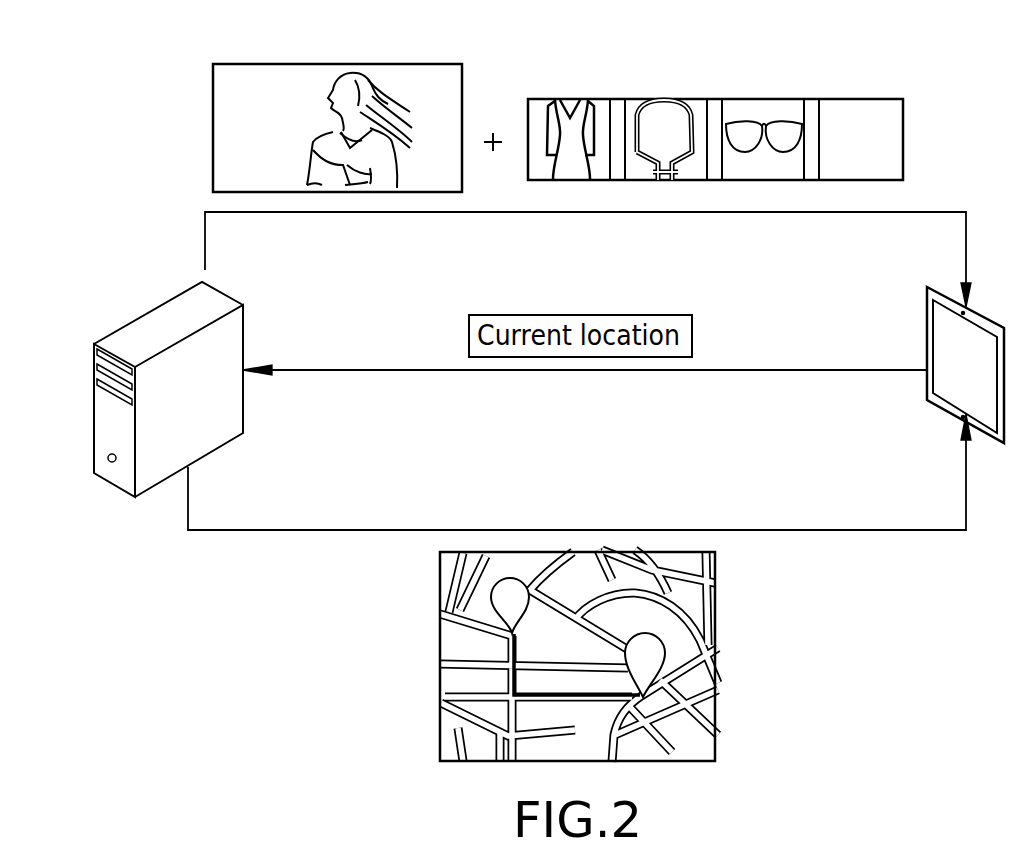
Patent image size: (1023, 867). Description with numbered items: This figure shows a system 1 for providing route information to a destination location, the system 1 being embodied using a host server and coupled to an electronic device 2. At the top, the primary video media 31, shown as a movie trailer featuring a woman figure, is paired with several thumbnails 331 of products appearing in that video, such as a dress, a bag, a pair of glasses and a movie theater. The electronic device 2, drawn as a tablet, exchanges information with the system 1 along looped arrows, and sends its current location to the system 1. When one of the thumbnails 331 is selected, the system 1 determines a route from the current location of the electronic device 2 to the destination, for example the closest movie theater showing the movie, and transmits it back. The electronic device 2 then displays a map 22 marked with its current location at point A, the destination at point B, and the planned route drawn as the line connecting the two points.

The system 1 is at (148, 312).
The electronic device 2 is at (993, 322).
The map 22 is at (715, 656).
The primary video media 31 is at (213, 128).
The thumbnail 331 is at (857, 99).